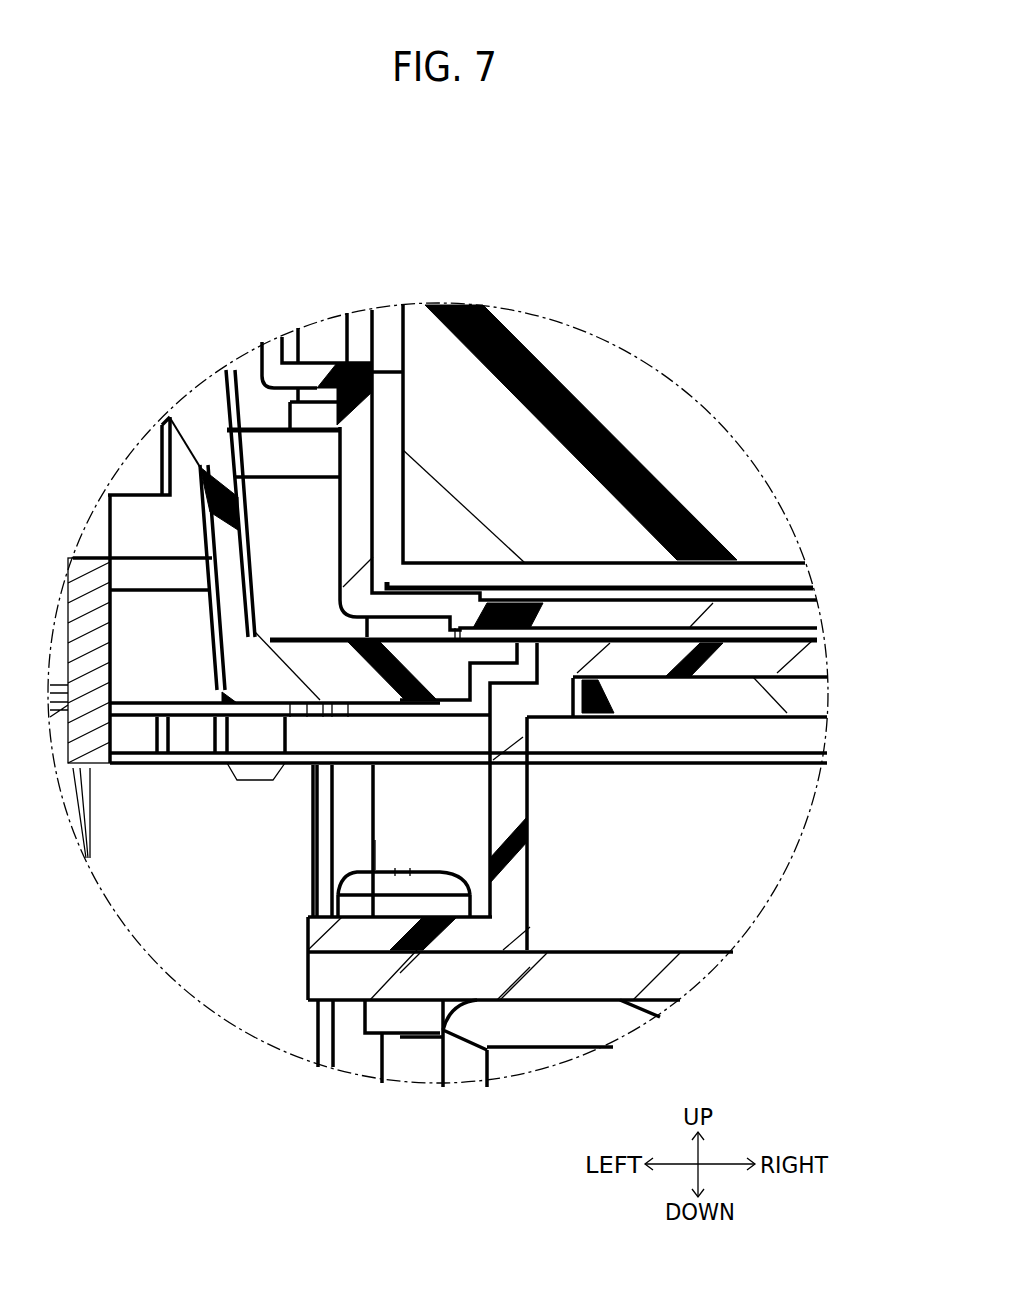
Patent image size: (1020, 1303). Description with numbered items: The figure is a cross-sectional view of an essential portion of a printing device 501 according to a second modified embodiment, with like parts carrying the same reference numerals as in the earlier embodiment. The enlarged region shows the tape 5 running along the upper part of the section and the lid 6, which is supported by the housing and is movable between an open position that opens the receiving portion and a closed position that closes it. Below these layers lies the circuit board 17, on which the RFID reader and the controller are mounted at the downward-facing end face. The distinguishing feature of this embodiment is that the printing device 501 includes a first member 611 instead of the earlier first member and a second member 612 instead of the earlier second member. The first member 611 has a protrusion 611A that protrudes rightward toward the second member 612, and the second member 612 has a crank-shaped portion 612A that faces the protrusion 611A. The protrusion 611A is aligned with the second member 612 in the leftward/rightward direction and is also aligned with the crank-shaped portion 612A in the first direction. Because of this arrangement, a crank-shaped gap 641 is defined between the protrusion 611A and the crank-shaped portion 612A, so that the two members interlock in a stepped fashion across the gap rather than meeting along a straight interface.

The printing device 501 is at (437, 228).
The tape 5 is at (603, 388).
The lid 6 is at (335, 527).
The protrusion 611A is at (503, 635).
The second member 612 is at (768, 662).
The circuit board 17 is at (788, 696).
The crank-shaped portion 612A is at (512, 690).
The crank-shaped gap 641 is at (520, 666).
The first member 611 is at (308, 667).